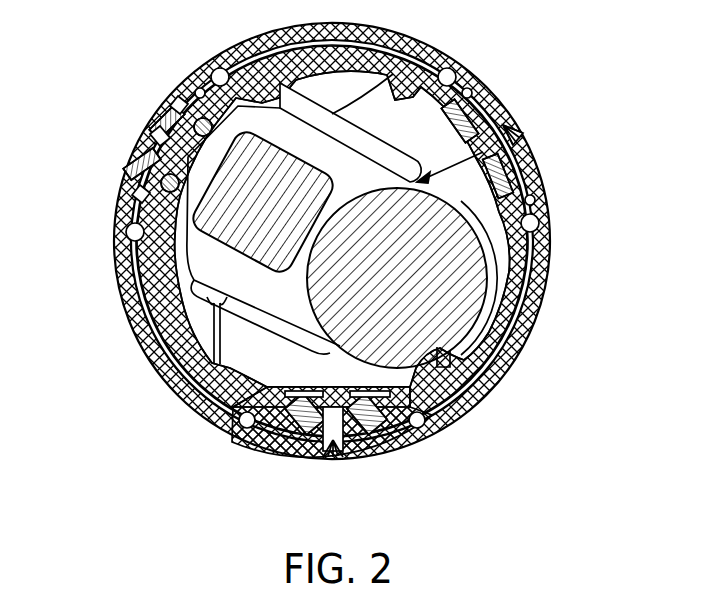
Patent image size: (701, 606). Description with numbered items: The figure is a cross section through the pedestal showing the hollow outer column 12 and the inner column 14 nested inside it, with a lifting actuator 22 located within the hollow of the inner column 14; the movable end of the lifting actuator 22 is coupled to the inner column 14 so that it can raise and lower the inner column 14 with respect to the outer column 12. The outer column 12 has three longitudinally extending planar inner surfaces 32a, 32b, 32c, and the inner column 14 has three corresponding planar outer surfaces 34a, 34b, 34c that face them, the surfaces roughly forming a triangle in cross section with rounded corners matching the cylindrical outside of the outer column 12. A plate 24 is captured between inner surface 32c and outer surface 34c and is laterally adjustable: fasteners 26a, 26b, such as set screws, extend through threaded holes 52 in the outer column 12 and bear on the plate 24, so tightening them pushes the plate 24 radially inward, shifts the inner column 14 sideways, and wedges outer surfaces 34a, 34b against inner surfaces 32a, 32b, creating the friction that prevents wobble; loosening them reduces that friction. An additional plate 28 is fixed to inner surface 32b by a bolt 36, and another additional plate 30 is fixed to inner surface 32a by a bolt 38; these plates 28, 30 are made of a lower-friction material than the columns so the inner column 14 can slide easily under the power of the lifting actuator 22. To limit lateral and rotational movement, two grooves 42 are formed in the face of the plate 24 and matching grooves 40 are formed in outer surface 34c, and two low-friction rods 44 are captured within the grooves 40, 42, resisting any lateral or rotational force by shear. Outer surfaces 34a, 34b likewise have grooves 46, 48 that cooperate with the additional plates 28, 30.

The outer column 12 is at (538, 302).
The inner column 14 is at (405, 47).
The lifting actuator 22 is at (488, 118).
The plate 24 is at (140, 142).
The fastener 26a is at (145, 110).
The fastener 26b is at (126, 168).
The additional plate 28 is at (370, 432).
The additional plate 30 is at (524, 178).
The inner surface 32a is at (545, 230).
The inner surface 32b is at (448, 410).
The inner surface 32c is at (125, 234).
The outer surface 34a is at (462, 84).
The outer surface 34b is at (246, 438).
The outer surface 34c is at (212, 70).
The bolt 36 is at (333, 460).
The bolt 38 is at (524, 144).
The groove 40 is at (262, 48).
The groove 42 is at (178, 98).
The rod 44 is at (244, 130).
The groove 46 is at (470, 158).
The groove 48 is at (272, 386).
The threaded hole 52 is at (150, 128).